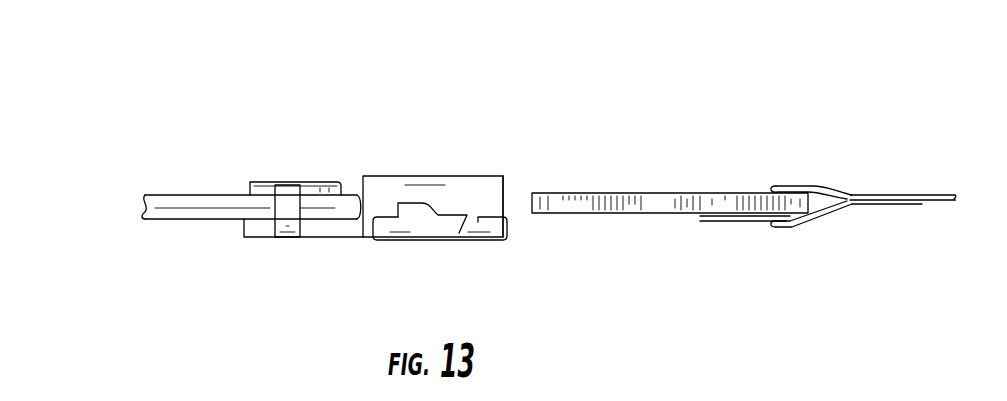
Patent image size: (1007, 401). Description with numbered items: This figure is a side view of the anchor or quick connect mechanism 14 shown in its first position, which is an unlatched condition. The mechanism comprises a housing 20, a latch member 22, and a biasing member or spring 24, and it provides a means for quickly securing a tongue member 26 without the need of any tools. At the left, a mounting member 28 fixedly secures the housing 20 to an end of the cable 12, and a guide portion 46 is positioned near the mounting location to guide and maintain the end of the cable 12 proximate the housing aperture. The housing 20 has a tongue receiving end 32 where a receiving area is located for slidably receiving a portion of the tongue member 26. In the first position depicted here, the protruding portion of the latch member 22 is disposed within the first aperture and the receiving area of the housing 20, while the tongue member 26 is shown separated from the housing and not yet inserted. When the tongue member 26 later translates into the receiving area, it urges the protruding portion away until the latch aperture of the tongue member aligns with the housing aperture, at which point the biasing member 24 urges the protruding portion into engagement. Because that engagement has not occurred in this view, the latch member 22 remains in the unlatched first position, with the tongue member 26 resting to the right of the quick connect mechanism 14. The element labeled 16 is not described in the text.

The cable 12 is at (167, 195).
The anchor or quick connect mechanism 14 is at (476, 106).
The cable 16 is at (865, 192).
The housing 20 is at (409, 176).
The latch member 22 is at (415, 228).
The biasing member or spring 24 is at (497, 241).
The tongue member 26 is at (650, 193).
The mounting member 28 is at (264, 181).
The tongue receiving end 32 is at (490, 176).
The guide portion 46 is at (289, 187).